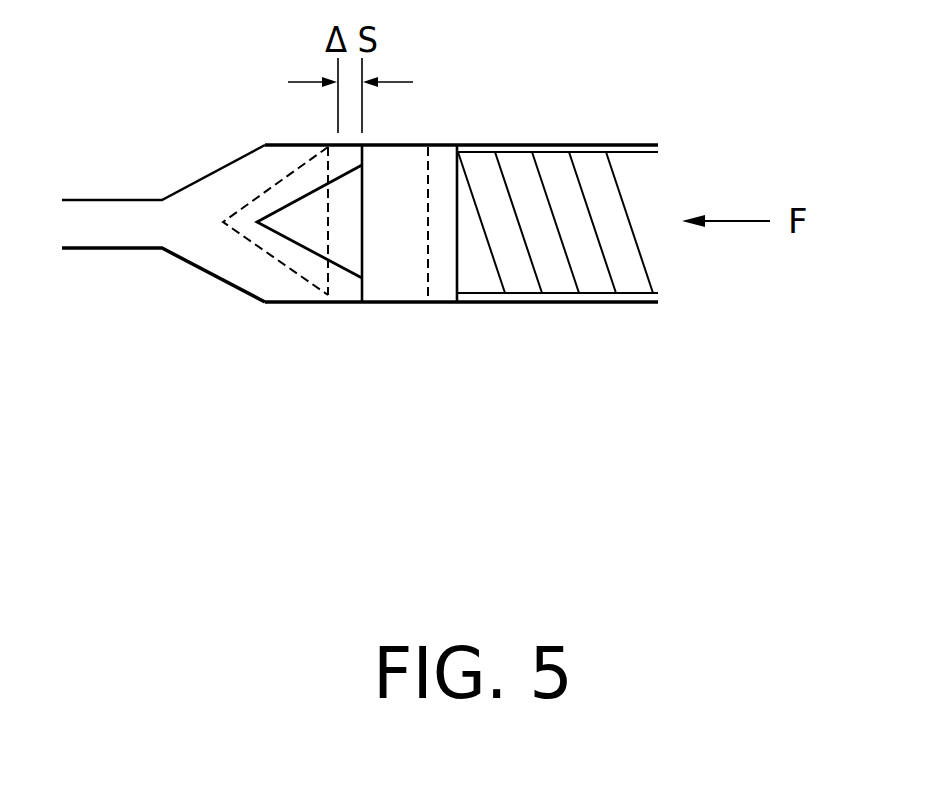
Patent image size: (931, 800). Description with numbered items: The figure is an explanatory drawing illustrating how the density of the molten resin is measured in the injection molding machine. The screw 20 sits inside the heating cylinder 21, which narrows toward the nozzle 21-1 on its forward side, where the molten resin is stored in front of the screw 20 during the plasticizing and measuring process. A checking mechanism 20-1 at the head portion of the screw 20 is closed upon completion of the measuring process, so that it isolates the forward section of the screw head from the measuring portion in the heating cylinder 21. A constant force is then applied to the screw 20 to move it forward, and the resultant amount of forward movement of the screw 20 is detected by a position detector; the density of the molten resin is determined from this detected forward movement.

The screw 20 is at (550, 293).
The checking mechanism 20-1 is at (403, 157).
The heating cylinder 21 is at (580, 143).
The nozzle 21-1 is at (128, 249).